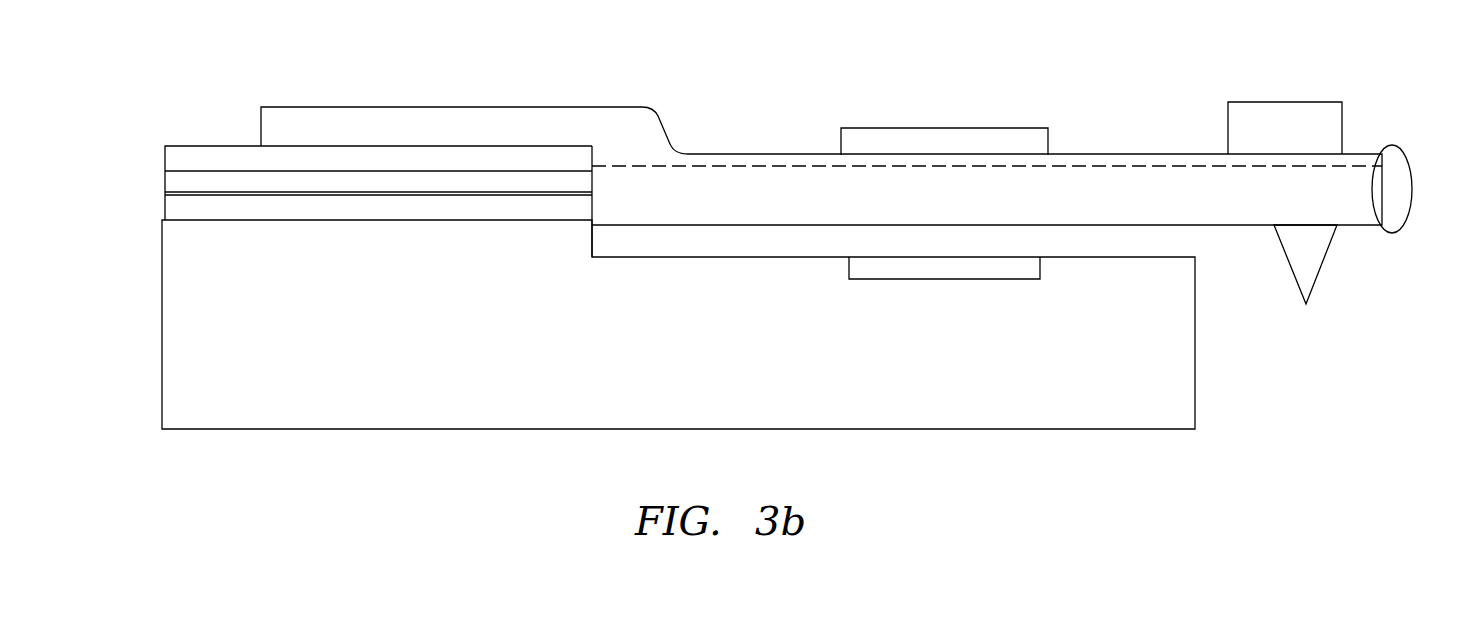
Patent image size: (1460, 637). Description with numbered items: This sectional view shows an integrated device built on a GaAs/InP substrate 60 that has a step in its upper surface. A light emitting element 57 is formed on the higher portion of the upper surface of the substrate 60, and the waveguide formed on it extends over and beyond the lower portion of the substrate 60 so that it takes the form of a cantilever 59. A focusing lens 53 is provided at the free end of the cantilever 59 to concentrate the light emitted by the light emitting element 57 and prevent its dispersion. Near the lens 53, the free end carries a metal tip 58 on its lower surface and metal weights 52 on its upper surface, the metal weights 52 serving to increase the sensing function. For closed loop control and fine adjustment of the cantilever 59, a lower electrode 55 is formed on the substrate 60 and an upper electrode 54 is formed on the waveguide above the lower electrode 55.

The metal weights 52 is at (1257, 108).
The focusing lens 53 is at (1390, 157).
The upper electrode 54 is at (912, 137).
The lower electrode 55 is at (980, 272).
The light emitting element 57 is at (200, 157).
The metal tip 58 is at (1312, 272).
The cantilever 59 is at (1222, 218).
The GaAs/InP substrate 60 is at (465, 405).